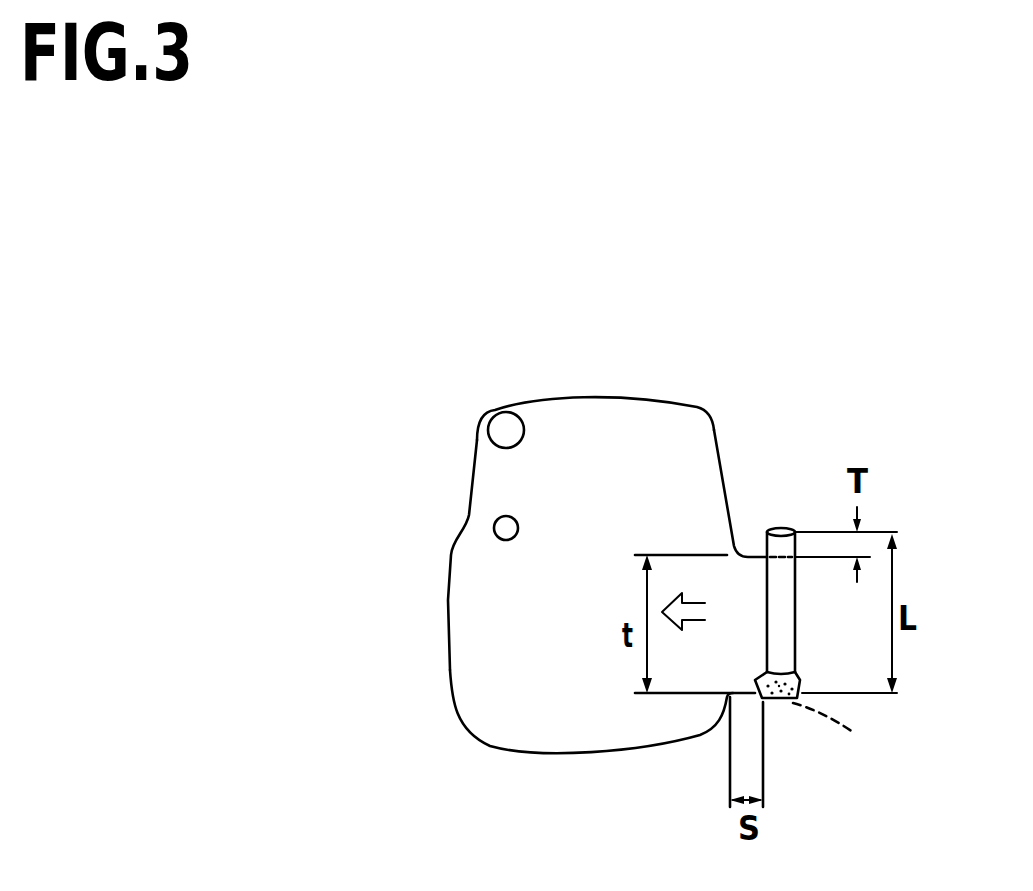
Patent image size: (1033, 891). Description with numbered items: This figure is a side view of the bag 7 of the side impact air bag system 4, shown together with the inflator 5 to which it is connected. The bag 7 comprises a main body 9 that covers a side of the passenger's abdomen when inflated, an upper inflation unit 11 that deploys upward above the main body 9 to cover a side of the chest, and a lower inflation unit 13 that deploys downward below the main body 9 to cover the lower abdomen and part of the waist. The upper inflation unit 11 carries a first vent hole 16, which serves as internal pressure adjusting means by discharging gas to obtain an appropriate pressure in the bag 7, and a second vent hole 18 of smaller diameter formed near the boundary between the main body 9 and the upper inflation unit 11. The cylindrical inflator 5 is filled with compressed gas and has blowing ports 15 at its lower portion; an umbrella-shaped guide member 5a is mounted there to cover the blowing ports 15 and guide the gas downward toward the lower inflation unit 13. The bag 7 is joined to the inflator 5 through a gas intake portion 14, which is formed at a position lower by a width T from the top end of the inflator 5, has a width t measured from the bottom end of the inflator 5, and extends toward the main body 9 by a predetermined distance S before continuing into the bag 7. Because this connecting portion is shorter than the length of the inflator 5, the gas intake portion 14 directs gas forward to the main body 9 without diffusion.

The side impact air bag system 4 is at (563, 571).
The inflator 5 is at (782, 548).
The guide member 5a is at (798, 680).
The bag 7 is at (438, 682).
The main body 9 is at (489, 607).
The upper inflation unit 11 is at (590, 413).
The lower inflation unit 13 is at (588, 737).
The gas intake portion 14 is at (748, 695).
The blowing ports 15 is at (844, 736).
The first vent hole 16 is at (506, 423).
The second vent hole 18 is at (495, 528).